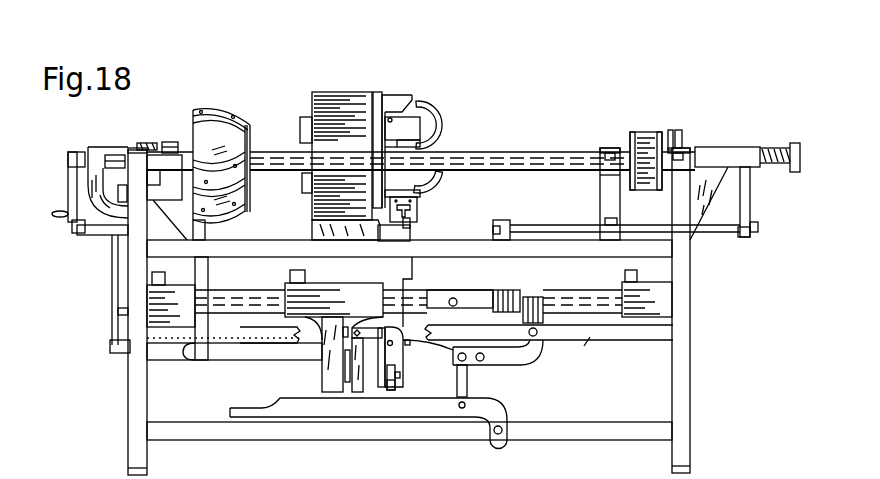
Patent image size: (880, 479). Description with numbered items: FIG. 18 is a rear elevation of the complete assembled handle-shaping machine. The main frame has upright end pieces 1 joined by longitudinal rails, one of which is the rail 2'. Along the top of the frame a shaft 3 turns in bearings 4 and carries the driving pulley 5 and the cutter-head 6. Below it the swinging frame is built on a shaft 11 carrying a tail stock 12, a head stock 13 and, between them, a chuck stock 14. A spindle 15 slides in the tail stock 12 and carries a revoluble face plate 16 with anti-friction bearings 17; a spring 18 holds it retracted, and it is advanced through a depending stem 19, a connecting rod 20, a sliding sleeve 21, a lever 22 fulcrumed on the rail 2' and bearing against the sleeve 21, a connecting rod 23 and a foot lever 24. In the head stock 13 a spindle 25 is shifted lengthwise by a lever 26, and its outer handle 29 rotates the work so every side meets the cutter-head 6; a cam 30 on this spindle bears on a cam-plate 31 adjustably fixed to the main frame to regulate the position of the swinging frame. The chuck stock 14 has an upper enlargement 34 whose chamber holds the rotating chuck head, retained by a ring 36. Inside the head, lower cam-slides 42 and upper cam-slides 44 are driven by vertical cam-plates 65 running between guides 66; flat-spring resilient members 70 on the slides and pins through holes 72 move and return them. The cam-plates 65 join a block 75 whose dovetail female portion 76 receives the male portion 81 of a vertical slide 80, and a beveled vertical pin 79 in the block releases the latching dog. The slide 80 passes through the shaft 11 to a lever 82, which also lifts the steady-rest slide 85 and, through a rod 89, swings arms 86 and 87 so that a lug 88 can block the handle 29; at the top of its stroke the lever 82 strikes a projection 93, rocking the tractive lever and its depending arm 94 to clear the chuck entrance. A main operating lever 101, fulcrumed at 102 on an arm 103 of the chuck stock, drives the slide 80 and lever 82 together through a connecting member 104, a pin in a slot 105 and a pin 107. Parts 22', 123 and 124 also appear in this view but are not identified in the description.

The upright end pieces 1 is at (127, 400).
The longitudinal rail 2' is at (594, 350).
The shaft 3 is at (536, 156).
The bearings 4 is at (133, 146).
The driving pulley 5 is at (645, 130).
The cutter-head 6 is at (221, 174).
The shaft 11 is at (580, 290).
The tail stock 12 is at (706, 206).
The head stock 13 is at (70, 184).
The chuck stock 14 is at (331, 164).
The spindle 15 is at (792, 166).
The revoluble face plate 16 is at (670, 129).
The anti friction bearings 17 is at (681, 130).
The spring 18 is at (777, 147).
The depending stem 19 is at (750, 205).
The connecting rod 20 is at (722, 234).
The sliding sleeve 21 is at (497, 289).
The lever 22 is at (410, 352).
The block 22' is at (544, 291).
The connecting rod 23 is at (467, 380).
The foot lever 24 is at (229, 410).
The spindle 25 is at (112, 150).
The lever 26 is at (117, 153).
The handle 29 is at (68, 216).
The cam 30 is at (172, 140).
The cam-plate 31 is at (167, 197).
The enlargement 34 is at (332, 91).
The ring 36 is at (377, 91).
The cam-slides 42 is at (302, 190).
The cam-slides 44 is at (300, 124).
The vertical cam-plates 65 is at (410, 95).
The vertical guides 66 is at (386, 100).
The resilient members 70 is at (440, 106).
The holes 72 is at (388, 121).
The block 75 is at (422, 196).
The female portion of dovetail connection 76 is at (417, 213).
The vertical pin 79 is at (417, 207).
The vertical slide 80 is at (413, 268).
The male portion of dovetail connection 81 is at (410, 223).
The lever 82 is at (115, 353).
The vertical slide 85 is at (208, 273).
The arm 86 is at (97, 236).
The arm 87 is at (117, 313).
The lug 88 is at (76, 234).
The rod 89 is at (112, 278).
The projection 93 is at (343, 334).
The depending arm 94 is at (345, 372).
The main operating lever 101 is at (391, 391).
The fulcrum 102 is at (397, 386).
The arm 103 is at (375, 380).
The connecting member 104 is at (404, 358).
The slot 105 is at (408, 340).
The pin 107 is at (401, 377).
The rim 123 is at (232, 108).
The rim 124 is at (250, 122).